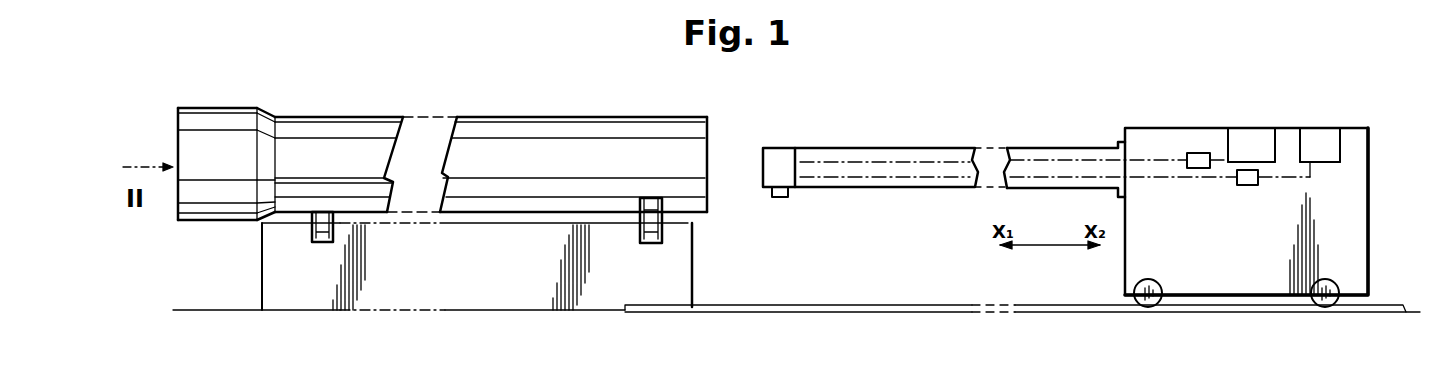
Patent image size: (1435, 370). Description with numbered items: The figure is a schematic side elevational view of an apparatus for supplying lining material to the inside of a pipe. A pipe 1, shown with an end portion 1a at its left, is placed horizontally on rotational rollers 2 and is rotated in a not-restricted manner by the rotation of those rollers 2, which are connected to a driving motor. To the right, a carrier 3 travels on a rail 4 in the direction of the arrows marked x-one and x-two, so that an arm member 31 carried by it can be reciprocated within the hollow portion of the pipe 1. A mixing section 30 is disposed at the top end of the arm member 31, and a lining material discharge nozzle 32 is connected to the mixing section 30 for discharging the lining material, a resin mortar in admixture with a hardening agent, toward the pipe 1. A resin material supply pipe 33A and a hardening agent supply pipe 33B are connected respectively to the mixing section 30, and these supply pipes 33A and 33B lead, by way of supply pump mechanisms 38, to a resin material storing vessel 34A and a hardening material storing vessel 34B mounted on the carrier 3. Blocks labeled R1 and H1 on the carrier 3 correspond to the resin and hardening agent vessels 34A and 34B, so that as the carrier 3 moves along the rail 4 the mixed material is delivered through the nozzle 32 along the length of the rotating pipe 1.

The pipe 1 is at (533, 135).
The tube end portion 1a is at (212, 120).
The rotational rollers 2 is at (663, 220).
The carrier 3 is at (1355, 222).
The rail 4 is at (845, 305).
The mixing section 30 is at (783, 152).
The arm member 31 is at (883, 150).
The lining material discharge nozzle 32 is at (787, 200).
The resin material supply pipe 33A is at (1050, 160).
The hardening agent supply pipe 33B is at (883, 177).
The resin material storing vessel 34A is at (1228, 140).
The hardening material storing vessel 34B is at (1345, 140).
The supply pump mechanisms 38 is at (1196, 170).
The relay R1 is at (1255, 142).
The hydraulic unit H1 is at (1320, 145).